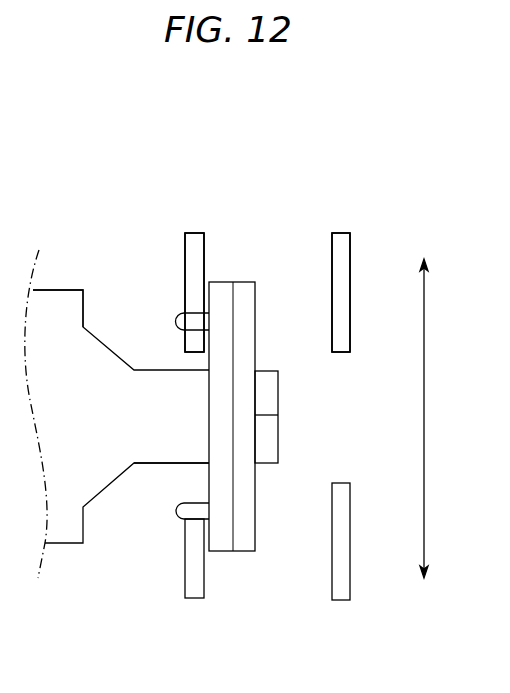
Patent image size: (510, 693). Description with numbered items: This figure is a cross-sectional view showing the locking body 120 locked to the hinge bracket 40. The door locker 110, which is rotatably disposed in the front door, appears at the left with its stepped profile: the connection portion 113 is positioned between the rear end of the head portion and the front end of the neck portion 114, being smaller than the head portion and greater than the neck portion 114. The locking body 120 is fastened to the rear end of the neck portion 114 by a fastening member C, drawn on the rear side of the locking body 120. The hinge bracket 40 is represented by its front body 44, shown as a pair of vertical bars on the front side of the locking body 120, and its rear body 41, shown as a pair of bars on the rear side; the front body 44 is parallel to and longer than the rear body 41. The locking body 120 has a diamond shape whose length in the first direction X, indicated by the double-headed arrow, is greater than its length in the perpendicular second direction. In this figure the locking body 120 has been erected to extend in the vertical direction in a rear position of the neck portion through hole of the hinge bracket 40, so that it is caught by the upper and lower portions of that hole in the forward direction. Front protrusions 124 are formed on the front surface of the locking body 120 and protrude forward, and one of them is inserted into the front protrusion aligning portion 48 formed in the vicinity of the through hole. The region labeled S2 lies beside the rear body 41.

The door locker 110 is at (75, 584).
The connection portion 113 is at (64, 292).
The neck portion 114 is at (168, 458).
The locking body 120 is at (222, 551).
The front protrusion 124 is at (176, 321).
The hinge bracket 40 is at (322, 157).
The rear body 41 is at (340, 238).
The front body 44 is at (195, 238).
The front protrusion aligning portion 48 is at (190, 312).
The fastening member C is at (272, 437).
The second space S2 is at (307, 293).
The first direction X is at (423, 408).